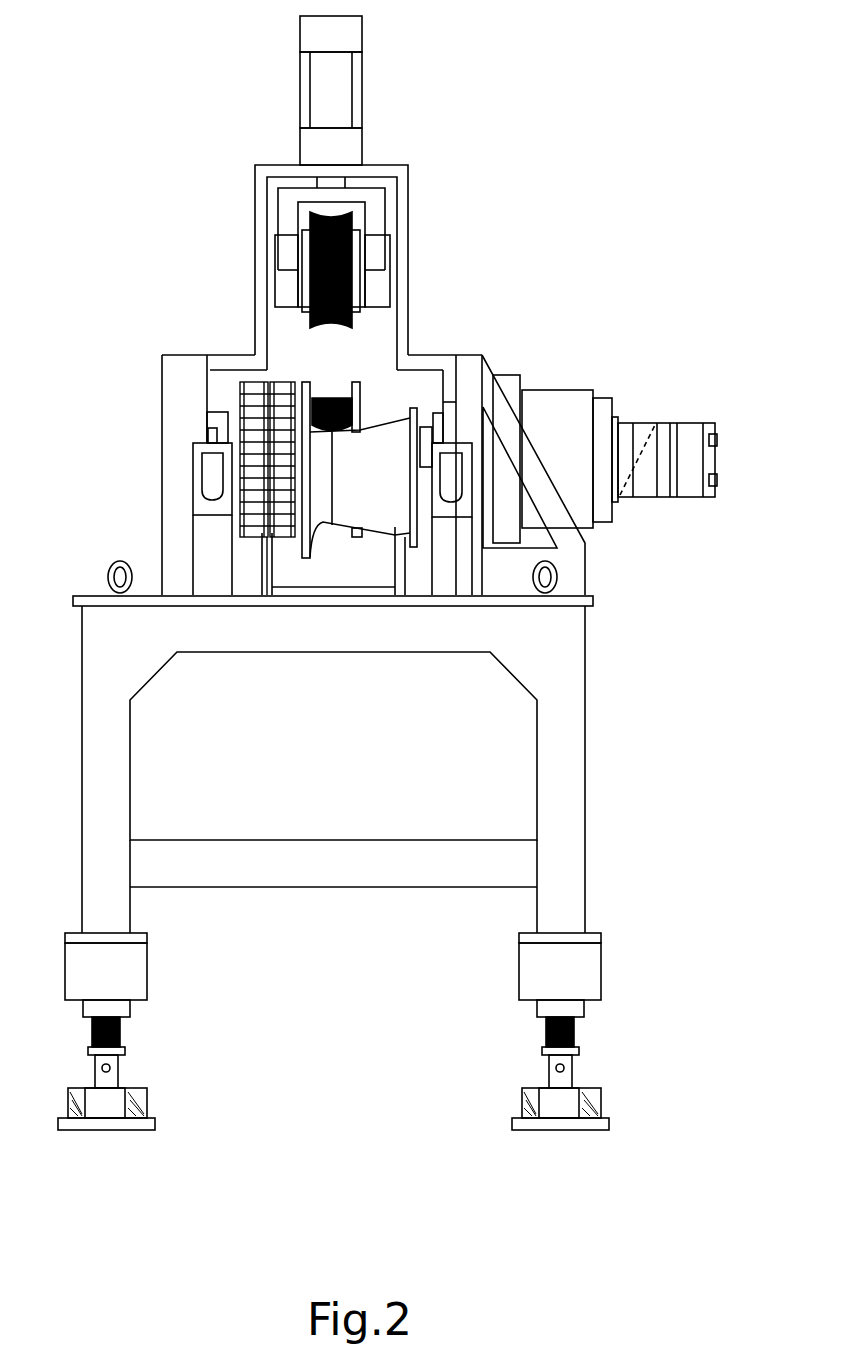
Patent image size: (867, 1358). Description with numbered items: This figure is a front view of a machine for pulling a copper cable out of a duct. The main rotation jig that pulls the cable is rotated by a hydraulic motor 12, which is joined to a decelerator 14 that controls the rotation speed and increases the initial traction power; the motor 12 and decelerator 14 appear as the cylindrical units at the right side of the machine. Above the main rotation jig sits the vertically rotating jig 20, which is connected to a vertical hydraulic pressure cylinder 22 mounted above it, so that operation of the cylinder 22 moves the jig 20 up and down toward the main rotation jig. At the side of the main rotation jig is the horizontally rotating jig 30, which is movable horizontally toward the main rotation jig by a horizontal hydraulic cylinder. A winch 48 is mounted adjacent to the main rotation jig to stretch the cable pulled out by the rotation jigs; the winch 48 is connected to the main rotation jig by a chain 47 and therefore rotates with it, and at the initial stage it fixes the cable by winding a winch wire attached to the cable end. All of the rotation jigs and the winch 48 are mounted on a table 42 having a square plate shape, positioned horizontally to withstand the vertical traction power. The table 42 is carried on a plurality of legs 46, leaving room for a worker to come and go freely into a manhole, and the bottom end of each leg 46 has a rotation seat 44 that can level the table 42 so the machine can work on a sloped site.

The hydraulic motor 12 is at (688, 445).
The decelerator 14 is at (560, 418).
The vertically rotating jig 20 is at (373, 232).
The vertical hydraulic pressure cylinder 22 is at (345, 32).
The horizontally rotating jig 30 is at (335, 386).
The table 42 is at (585, 598).
The rotation seat 44 is at (598, 1102).
The leg 46 is at (570, 762).
The chain 47 is at (262, 393).
The winch 48 is at (312, 481).